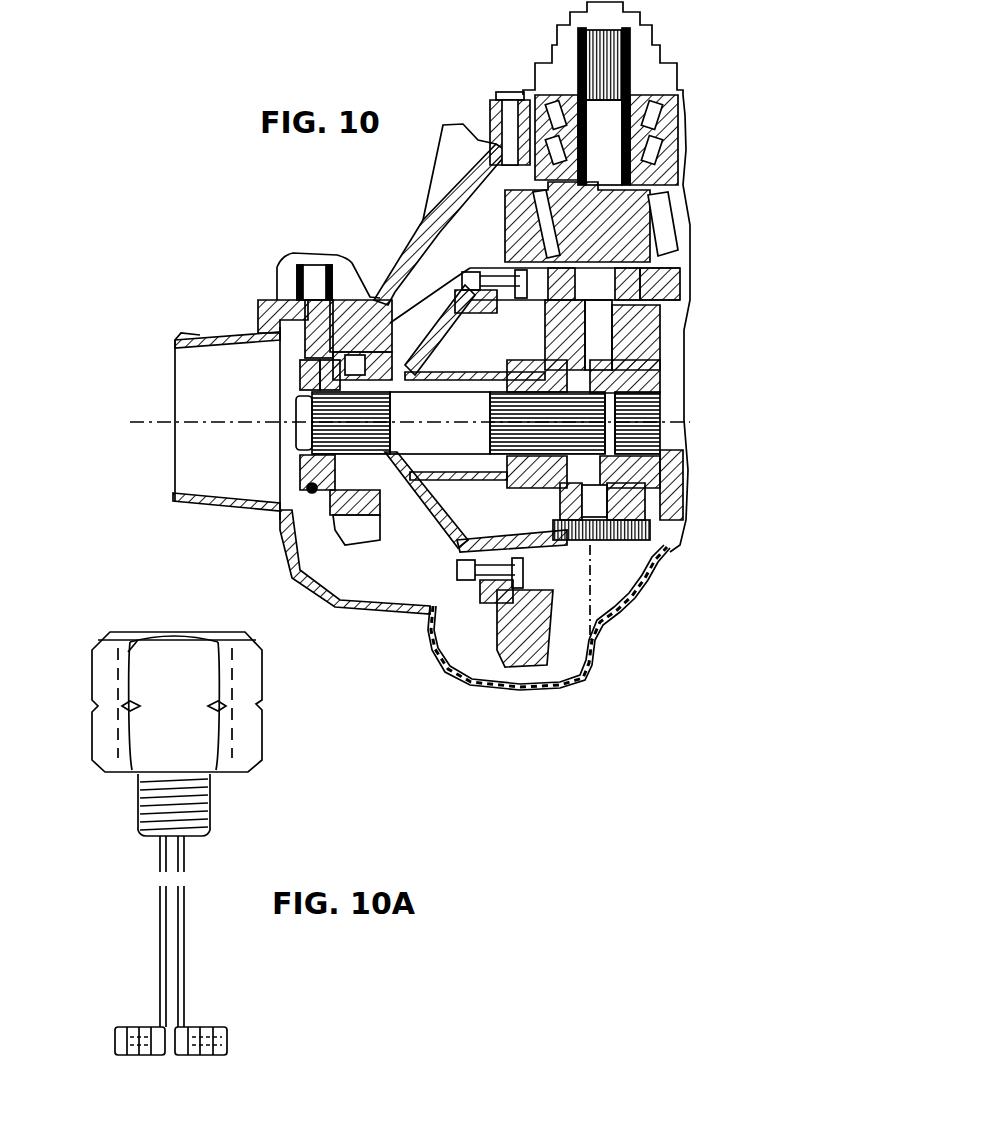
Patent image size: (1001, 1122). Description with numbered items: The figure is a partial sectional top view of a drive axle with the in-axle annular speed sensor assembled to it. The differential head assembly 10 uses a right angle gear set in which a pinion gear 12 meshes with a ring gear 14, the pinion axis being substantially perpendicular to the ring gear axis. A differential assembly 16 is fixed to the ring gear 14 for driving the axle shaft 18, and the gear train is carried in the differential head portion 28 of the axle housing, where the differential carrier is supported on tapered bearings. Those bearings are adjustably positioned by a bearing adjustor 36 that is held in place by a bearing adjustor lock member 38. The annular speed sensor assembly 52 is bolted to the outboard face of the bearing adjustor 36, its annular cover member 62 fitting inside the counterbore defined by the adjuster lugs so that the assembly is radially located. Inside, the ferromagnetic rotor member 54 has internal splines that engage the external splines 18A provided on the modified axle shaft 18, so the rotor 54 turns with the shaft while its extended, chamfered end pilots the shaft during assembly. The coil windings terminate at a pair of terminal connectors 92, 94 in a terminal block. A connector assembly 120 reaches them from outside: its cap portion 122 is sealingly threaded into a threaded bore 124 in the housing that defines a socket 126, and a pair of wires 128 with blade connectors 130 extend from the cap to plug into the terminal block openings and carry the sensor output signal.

In FIG. 10, the differential head assembly 10 is at (692, 188).
In FIG. 10, the pinion gear 12 is at (655, 240).
In FIG. 10, the ring gear 14 is at (505, 225).
In FIG. 10, the differential assembly 16 is at (512, 485).
In FIG. 10, the axle shaft 18 is at (298, 430).
In FIG. 10, the external splines 18A is at (372, 418).
In FIG. 10, the differential head portion 28 is at (418, 238).
In FIG. 10, the bearing adjustor 36 is at (390, 318).
In FIG. 10, the bearing adjustor lock member 38 is at (360, 520).
In FIG. 10, the annular speed sensor assembly 52 is at (312, 500).
In FIG. 10, the ferromagnetic rotor member 54 is at (312, 458).
In FIG. 10, the annular cover member 62 is at (306, 489).
In FIG. 10, the terminal connector 92 is at (310, 375).
In FIG. 10, the terminal connector 94 is at (330, 375).
In FIG. 10, the connector assembly 120 is at (290, 265).
In FIG. 10A, the connector assembly 120 is at (233, 714).
In FIG. 10, the cap portion 122 is at (332, 275).
In FIG. 10A, the cap portion 122 is at (250, 676).
In FIG. 10, the threaded bore 124 is at (270, 300).
In FIG. 10A, the socket 126 is at (128, 652).
In FIG. 10, the wires 128 is at (305, 340).
In FIG. 10A, the wires 128 is at (153, 920).
In FIG. 10A, the blade connectors 130 is at (108, 1040).